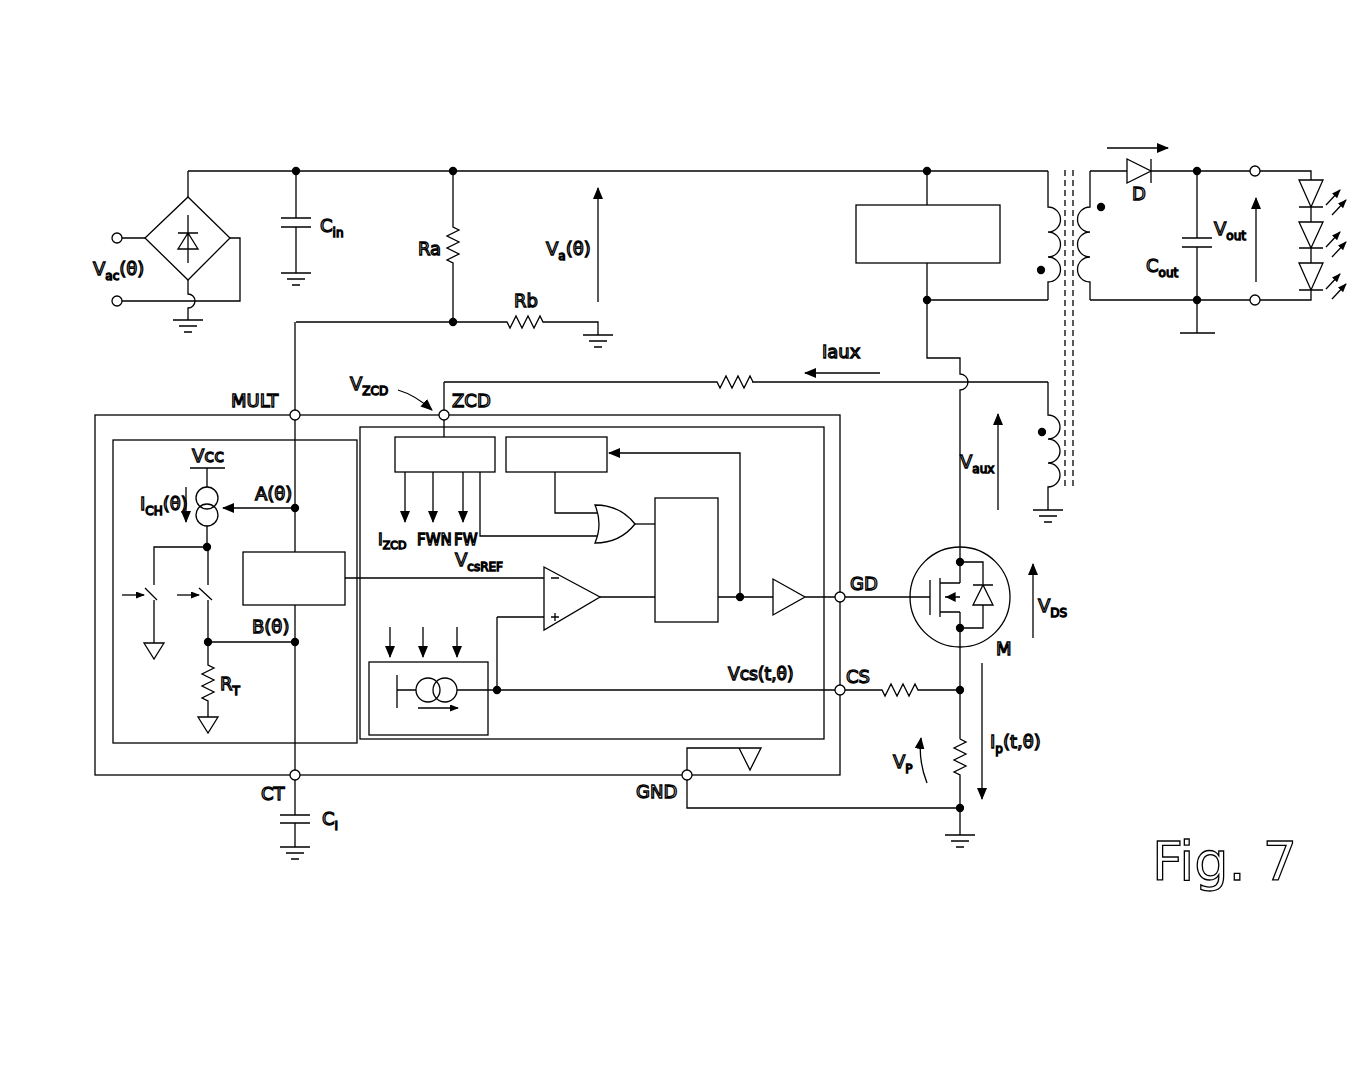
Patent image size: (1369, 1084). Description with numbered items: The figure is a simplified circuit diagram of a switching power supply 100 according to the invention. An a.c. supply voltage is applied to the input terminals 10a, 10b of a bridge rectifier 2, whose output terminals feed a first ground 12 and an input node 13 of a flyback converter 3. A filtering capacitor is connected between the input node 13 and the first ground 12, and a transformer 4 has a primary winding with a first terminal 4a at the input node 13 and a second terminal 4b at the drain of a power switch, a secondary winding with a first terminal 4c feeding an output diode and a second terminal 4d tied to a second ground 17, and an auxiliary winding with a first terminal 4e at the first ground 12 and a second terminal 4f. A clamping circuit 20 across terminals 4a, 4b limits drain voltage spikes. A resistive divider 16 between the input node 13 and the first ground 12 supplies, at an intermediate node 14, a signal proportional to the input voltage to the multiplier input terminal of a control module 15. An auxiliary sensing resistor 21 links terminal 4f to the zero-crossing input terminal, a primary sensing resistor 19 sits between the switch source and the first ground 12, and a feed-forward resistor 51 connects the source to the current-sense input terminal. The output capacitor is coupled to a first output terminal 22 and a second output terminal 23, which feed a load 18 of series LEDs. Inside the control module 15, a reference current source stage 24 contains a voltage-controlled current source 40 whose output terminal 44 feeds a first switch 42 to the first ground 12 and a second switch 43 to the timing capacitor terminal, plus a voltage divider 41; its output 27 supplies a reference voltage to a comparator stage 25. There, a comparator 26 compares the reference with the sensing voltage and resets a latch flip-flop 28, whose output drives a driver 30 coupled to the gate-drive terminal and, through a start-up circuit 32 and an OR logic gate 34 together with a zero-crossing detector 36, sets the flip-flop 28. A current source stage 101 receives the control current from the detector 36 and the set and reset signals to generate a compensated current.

The bridge rectifier 2 is at (150, 211).
The flyback converter 3 is at (667, 158).
The transformer 4 is at (1067, 160).
The first terminal of the primary winding 4a is at (925, 168).
The second terminal of the primary winding 4b is at (925, 301).
The first terminal of the secondary winding 4c is at (1090, 170).
The second terminal of the secondary winding 4d is at (1090, 302).
The first terminal of the auxiliary winding 4e is at (1052, 499).
The second terminal of the auxiliary winding 4f is at (1050, 379).
The input terminal 10a is at (112, 236).
The input terminal 10b is at (112, 302).
The first ground 12 is at (182, 332).
The input node 13 is at (214, 171).
The intermediate node 14 is at (450, 326).
The control module 15 is at (495, 777).
The resistive divider 16 is at (520, 220).
The second ground 17 is at (1190, 338).
The load 18 is at (1316, 156).
The primary sensing resistor 19 is at (957, 746).
The clamping circuit 20 is at (856, 236).
The auxiliary sensing resistor 21 is at (724, 377).
The first output terminal 22 is at (1256, 166).
The second output terminal 23 is at (1258, 305).
The reference current source stage 24 is at (126, 745).
The comparator stage 25 is at (562, 741).
The comparator 26 is at (582, 610).
The output of the reference current source stage 27 is at (363, 579).
The latch flip-flop 28 is at (695, 624).
The driver 30 is at (794, 612).
The start-up circuit 32 is at (545, 473).
The logic gate 34 is at (612, 505).
The zero-crossing detector 36 is at (395, 457).
The voltage-controlled current source 40 is at (219, 494).
The voltage divider 41 is at (319, 551).
The first switch 42 is at (148, 599).
The second switch 43 is at (208, 602).
The output terminal of the current source 44 is at (211, 546).
The feed-forward resistor 51 is at (887, 686).
The switching power supply 100 is at (1102, 657).
The current source stage 101 is at (405, 738).